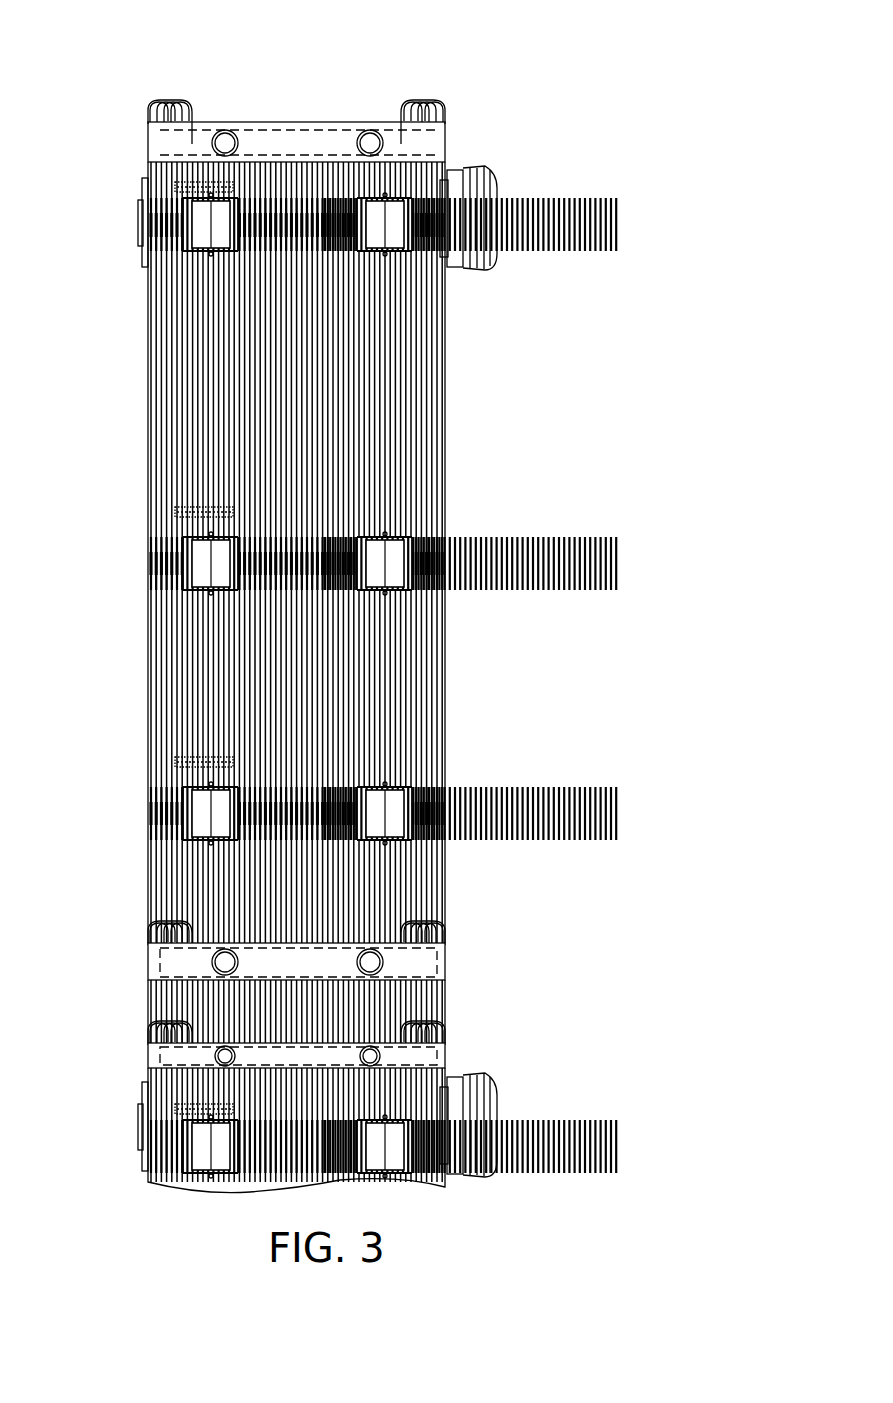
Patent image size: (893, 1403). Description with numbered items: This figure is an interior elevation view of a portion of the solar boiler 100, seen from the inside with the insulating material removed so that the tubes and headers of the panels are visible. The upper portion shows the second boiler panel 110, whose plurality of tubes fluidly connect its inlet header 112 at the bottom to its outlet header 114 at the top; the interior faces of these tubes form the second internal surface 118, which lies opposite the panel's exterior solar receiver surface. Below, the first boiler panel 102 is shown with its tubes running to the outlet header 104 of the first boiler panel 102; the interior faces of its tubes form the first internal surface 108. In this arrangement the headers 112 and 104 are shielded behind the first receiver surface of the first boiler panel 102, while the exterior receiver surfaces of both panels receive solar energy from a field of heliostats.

The solar boiler 100 is at (470, 62).
The second boiler panel 110 is at (351, 563).
The outlet header of second boiler panel 114 is at (290, 135).
The second internal surface 118 is at (311, 394).
The inlet header of second boiler panel 112 is at (312, 975).
The first boiler panel 102 is at (312, 1031).
The outlet header of first boiler panel 104 is at (150, 1058).
The first internal surface 108 is at (312, 1143).